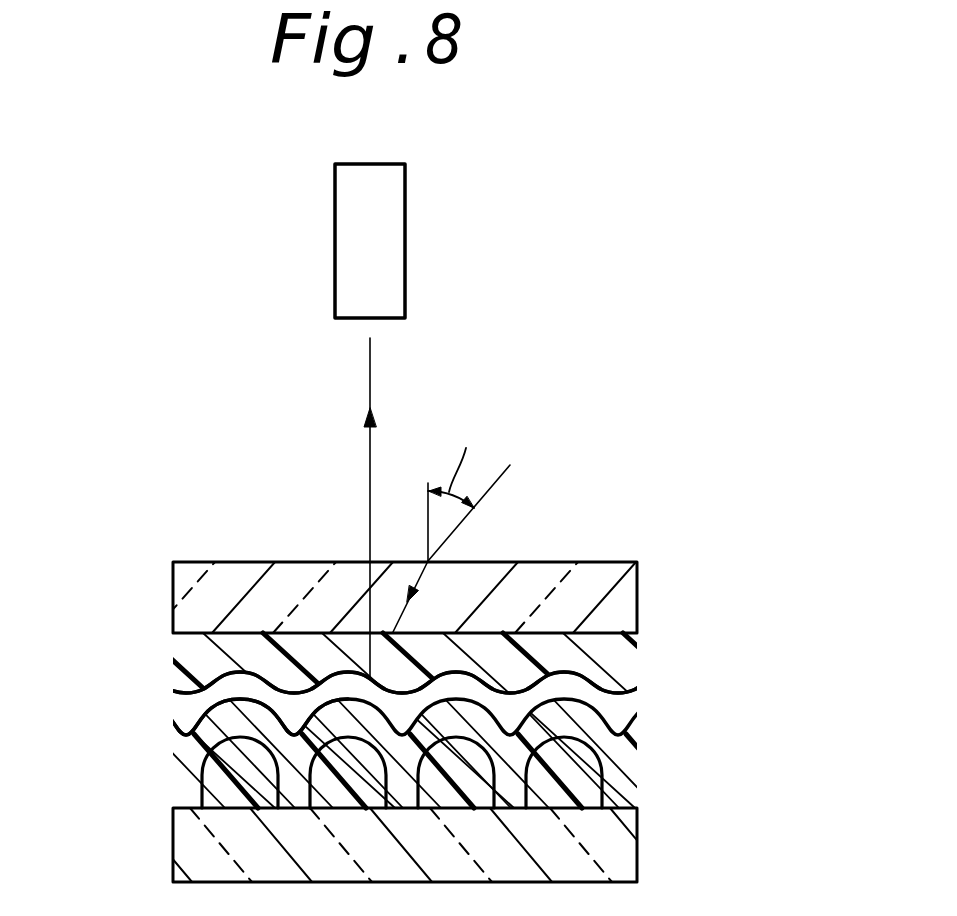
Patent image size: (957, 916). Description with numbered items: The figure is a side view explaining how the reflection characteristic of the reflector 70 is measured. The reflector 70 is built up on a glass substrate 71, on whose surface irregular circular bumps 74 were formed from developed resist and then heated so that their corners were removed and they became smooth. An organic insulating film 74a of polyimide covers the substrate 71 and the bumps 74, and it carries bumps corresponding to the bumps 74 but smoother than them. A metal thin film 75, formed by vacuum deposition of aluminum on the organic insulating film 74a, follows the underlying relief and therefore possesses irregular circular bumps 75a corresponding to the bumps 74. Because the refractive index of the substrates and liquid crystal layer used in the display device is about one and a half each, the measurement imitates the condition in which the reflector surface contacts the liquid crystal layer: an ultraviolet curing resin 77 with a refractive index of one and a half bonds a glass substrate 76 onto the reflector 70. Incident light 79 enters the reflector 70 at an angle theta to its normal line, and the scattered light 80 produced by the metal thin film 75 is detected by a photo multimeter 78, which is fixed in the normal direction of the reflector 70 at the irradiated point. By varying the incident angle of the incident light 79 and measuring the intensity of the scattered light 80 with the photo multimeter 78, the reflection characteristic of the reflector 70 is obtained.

The reflector 70 is at (773, 553).
The substrate 71 is at (615, 848).
The bumps 74 is at (583, 762).
The organic insulating film 74a is at (605, 706).
The metal thin film 75 is at (600, 700).
The irregular circular bumps 75a is at (600, 632).
The glass substrate 76 is at (186, 586).
The ultraviolet curing resin 77 is at (190, 694).
The photo multimeter 78 is at (392, 254).
The incident light 79 is at (487, 496).
The scattered light 80 is at (366, 450).